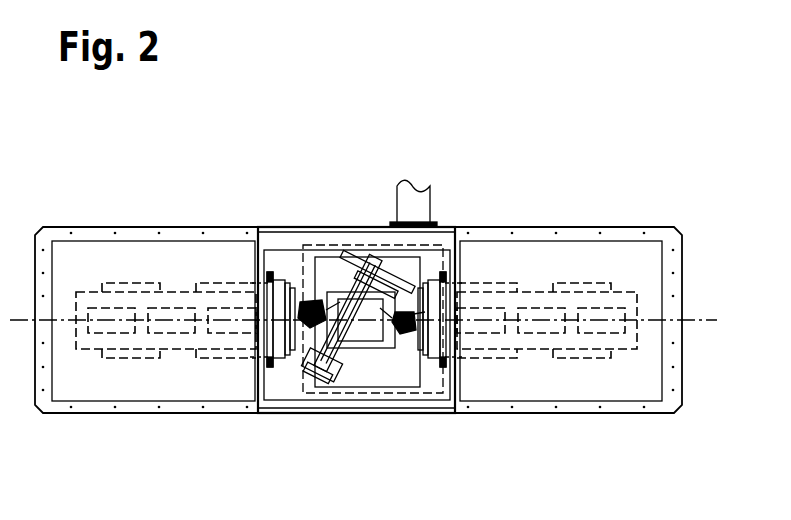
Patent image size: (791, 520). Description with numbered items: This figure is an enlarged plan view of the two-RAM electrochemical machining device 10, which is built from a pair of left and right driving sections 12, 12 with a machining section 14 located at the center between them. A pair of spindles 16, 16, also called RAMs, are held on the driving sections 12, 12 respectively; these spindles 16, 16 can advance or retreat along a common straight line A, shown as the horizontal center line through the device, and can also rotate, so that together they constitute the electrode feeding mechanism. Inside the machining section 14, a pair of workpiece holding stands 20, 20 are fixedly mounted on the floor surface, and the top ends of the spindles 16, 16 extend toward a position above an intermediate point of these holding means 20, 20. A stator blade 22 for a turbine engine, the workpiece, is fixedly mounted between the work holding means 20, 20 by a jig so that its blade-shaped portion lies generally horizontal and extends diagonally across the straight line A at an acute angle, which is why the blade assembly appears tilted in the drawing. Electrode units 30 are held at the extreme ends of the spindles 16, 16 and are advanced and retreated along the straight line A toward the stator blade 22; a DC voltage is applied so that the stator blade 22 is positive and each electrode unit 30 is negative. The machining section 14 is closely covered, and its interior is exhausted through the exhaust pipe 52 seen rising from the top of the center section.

The electrochemical machining device 10 is at (573, 164).
The driving section 12 is at (87, 404).
The machining section 14 is at (431, 430).
The spindle 16 is at (88, 292).
The workpiece holding stand 20 is at (386, 272).
The stator blade 22 is at (345, 262).
The electrode unit 30 is at (343, 290).
The exhaust pipe 52 is at (431, 207).
The straight line A is at (688, 320).